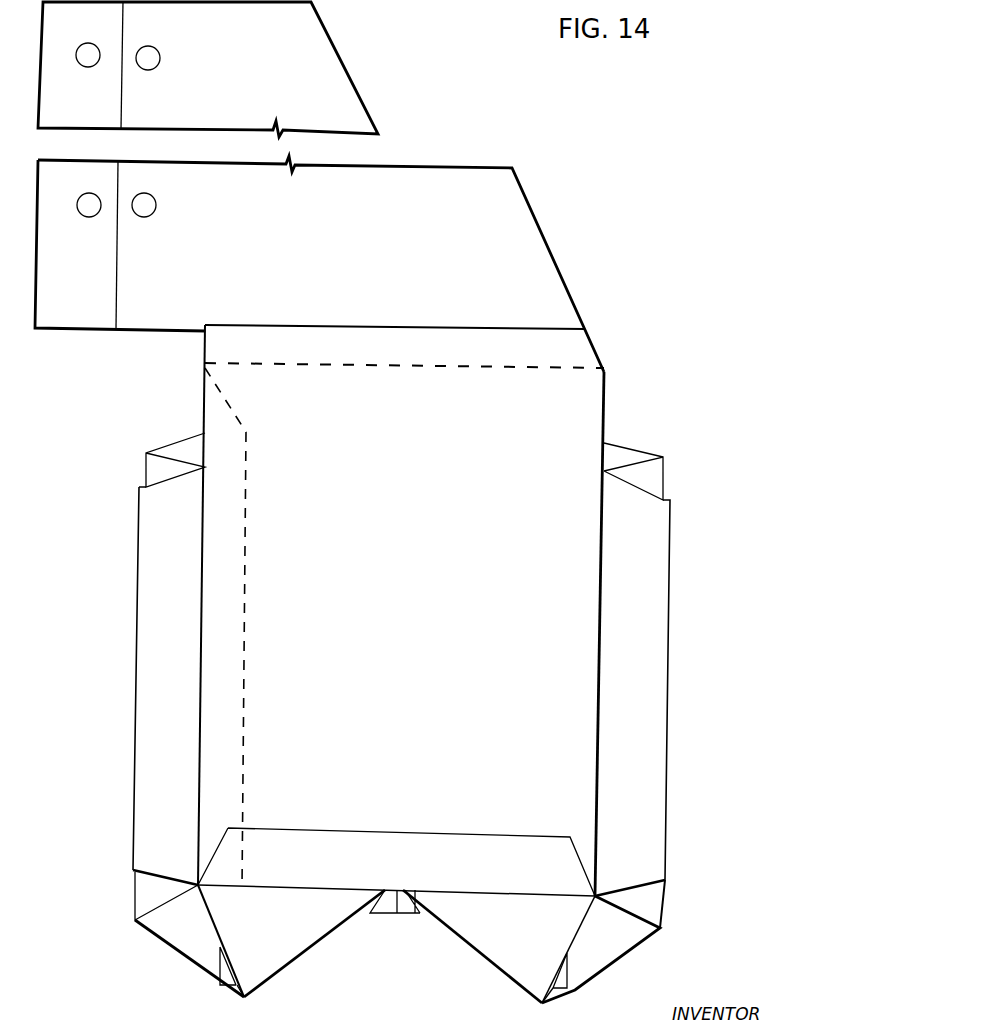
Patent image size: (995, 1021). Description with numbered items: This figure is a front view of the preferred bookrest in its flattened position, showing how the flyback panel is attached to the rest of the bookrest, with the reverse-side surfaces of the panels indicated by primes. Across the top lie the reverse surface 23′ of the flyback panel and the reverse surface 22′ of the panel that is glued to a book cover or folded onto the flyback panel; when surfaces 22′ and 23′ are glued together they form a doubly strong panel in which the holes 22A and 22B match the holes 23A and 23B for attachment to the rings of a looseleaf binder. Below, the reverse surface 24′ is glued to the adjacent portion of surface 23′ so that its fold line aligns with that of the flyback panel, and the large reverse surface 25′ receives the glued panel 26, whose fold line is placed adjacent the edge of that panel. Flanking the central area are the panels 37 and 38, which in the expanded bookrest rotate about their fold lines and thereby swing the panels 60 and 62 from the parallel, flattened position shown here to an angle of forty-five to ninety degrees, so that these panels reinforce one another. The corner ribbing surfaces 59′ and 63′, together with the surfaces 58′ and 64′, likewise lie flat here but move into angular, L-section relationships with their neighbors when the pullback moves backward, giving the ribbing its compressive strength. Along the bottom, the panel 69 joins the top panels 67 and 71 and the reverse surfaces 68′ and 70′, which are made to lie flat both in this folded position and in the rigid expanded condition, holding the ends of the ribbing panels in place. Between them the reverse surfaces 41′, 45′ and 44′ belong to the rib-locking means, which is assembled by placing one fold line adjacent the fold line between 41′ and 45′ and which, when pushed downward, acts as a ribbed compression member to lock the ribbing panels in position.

The reverse surface of panel 22 22′ is at (90, 104).
The reverse surface of flyback panel 23 23′ is at (325, 107).
The hole 22A is at (100, 28).
The hole 23A is at (138, 48).
The hole 22B is at (94, 194).
The hole 23B is at (135, 195).
The reverse surface of panel 24 24′ is at (410, 361).
The reverse surface of panel 25 25′ is at (396, 552).
The panel 26 is at (242, 628).
The panel 37 is at (172, 646).
The panel 38 is at (650, 651).
The reverse surface of panel 59 59′ is at (182, 448).
The panel 60 is at (172, 477).
The panel 62 is at (657, 484).
The reverse surface of panel 63 63′ is at (622, 949).
The panel 69 is at (371, 876).
The panel 67 is at (275, 939).
The panel 71 is at (540, 949).
The reverse surface of panel 58 58′ is at (227, 977).
The reverse surface of panel 68 68′ is at (237, 990).
The reverse surface of panel 41 41′ is at (382, 908).
The reverse surface of panel 45 45′ is at (400, 910).
The reverse surface of panel 44 44′ is at (418, 908).
The reverse surface of panel 64 64′ is at (568, 980).
The reverse surface of panel 70 70′ is at (555, 992).